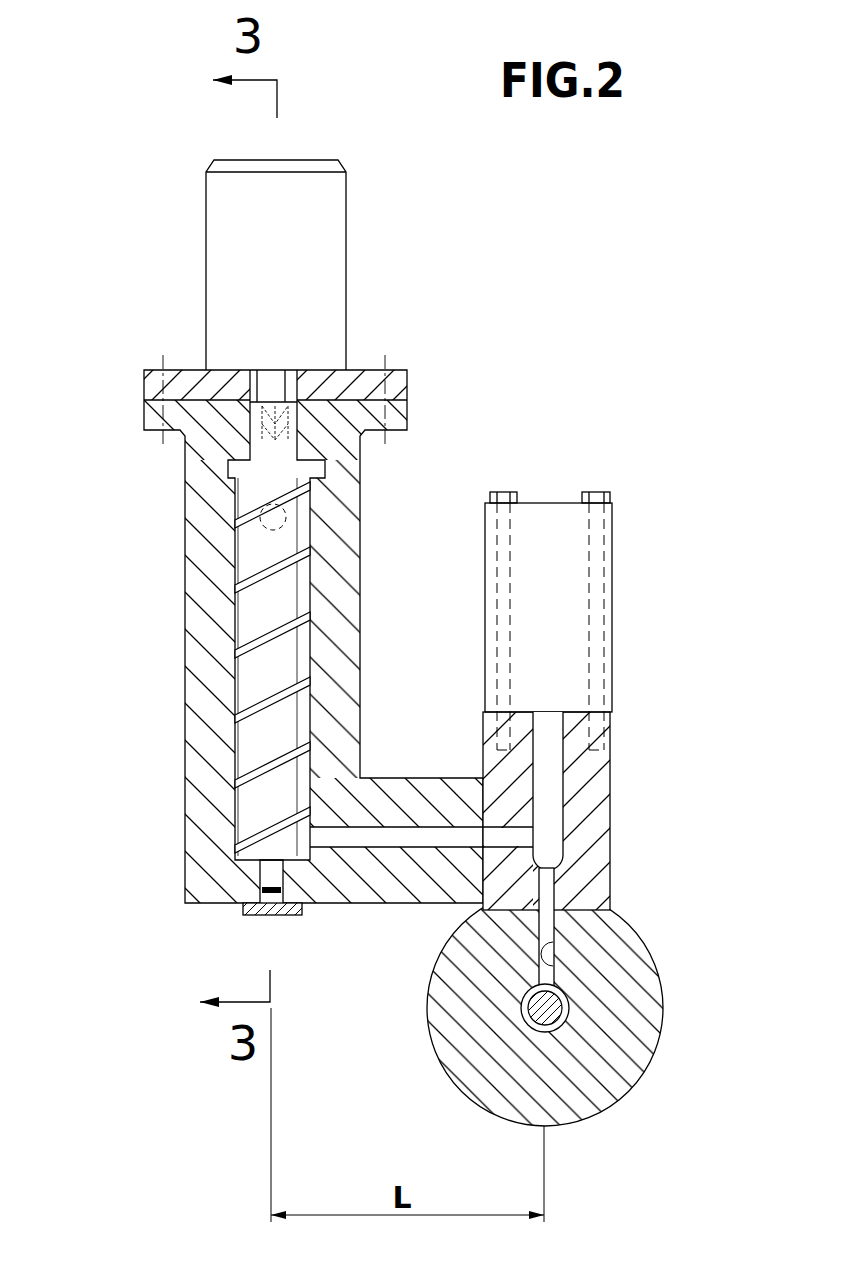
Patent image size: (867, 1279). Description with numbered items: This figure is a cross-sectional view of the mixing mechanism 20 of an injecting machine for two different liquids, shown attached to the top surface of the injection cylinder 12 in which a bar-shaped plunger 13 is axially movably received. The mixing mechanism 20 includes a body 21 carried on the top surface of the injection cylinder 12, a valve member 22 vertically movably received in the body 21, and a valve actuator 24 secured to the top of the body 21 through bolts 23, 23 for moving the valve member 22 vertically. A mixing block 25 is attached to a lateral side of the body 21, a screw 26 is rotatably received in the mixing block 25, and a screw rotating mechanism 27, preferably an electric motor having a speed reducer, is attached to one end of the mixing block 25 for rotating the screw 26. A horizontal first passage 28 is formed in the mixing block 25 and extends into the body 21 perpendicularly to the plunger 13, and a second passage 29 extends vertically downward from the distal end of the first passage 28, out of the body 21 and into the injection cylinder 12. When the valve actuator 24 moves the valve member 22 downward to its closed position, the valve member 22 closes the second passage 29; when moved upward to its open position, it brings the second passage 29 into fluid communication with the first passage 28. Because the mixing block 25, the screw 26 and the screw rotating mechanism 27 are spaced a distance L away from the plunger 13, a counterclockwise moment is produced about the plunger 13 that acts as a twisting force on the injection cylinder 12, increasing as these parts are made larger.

The injection cylinder 12 is at (650, 1027).
The plunger 13 is at (533, 1028).
The mixing mechanism 20 is at (591, 355).
The body 21 is at (603, 777).
The valve member 22 is at (550, 852).
The bolts 23 is at (505, 490).
The valve actuator 24 is at (608, 600).
The mixing block 25 is at (198, 800).
The screw 26 is at (268, 603).
The screw rotating mechanism 27 is at (182, 253).
The first passage 28 is at (358, 850).
The second passage 29 is at (550, 973).